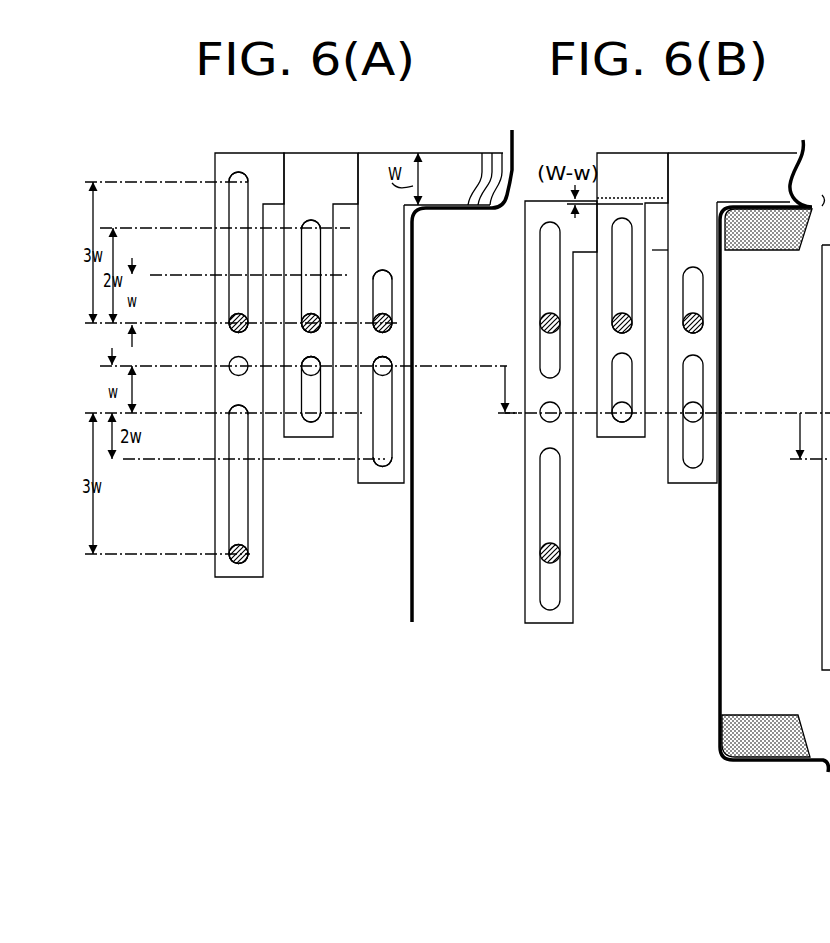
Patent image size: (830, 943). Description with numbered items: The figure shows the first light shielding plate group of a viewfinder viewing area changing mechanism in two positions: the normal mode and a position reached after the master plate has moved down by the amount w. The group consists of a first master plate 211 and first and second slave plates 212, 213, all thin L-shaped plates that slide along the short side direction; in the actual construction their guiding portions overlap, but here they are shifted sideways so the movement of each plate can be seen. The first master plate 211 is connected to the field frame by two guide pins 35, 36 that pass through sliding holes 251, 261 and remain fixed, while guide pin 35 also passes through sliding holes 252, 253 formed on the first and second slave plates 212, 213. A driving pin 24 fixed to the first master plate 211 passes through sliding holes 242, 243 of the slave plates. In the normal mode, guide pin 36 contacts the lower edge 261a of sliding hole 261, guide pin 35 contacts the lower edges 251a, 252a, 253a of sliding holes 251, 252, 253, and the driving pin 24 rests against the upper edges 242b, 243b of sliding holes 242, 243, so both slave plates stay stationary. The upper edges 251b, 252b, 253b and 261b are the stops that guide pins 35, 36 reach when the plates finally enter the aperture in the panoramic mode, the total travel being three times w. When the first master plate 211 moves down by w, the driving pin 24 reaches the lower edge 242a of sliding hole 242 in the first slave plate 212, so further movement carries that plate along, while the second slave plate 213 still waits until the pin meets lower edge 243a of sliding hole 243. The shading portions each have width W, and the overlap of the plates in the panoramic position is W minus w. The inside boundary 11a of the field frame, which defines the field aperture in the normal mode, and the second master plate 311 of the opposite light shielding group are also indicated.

In FIG. 6A, the first master plate 211 is at (229, 152).
In FIG. 6B, the first master plate 211 is at (786, 250).
In FIG. 6A, the first slave plate 212 is at (308, 153).
In FIG. 6B, the first slave plate 212 is at (640, 136).
In FIG. 6A, the second slave plate 213 is at (444, 155).
In FIG. 6B, the second slave plate 213 is at (744, 155).
In FIG. 6A, the sliding hole 251 is at (233, 212).
In FIG. 6A, the lower edge of sliding hole 251 251a is at (230, 321).
In FIG. 6A, the upper edge of sliding hole 251 251b is at (240, 176).
In FIG. 6A, the sliding hole 252 is at (319, 242).
In FIG. 6A, the lower edge of sliding hole 252 252a is at (303, 318).
In FIG. 6A, the upper edge of sliding hole 252 252b is at (306, 222).
In FIG. 6A, the sliding hole 253 is at (389, 271).
In FIG. 6A, the lower edge of sliding hole 253 253a is at (394, 318).
In FIG. 6A, the upper edge of sliding hole 253 253b is at (381, 268).
In FIG. 6A, the sliding hole 261 is at (234, 491).
In FIG. 6A, the lower edge of sliding hole 261 261a is at (247, 557).
In FIG. 6A, the upper edge of sliding hole 261 261b is at (236, 411).
In FIG. 6A, the sliding hole 242 is at (311, 409).
In FIG. 6A, the lower edge of sliding hole 242 242a is at (307, 420).
In FIG. 6A, the upper edge of sliding hole 242 242b is at (305, 376).
In FIG. 6A, the sliding hole 243 is at (389, 418).
In FIG. 6A, the lower edge of sliding hole 243 243a is at (387, 463).
In FIG. 6A, the upper edge of sliding hole 243 243b is at (391, 370).
In FIG. 6A, the guide pin 35 is at (301, 327).
In FIG. 6A, the driving pin 24 is at (232, 369).
In FIG. 6A, the guide pin 36 is at (232, 543).
In FIG. 6B, the inside boundary of the field frame 11a is at (718, 630).
In FIG. 6B, the second master plate 311 is at (762, 714).